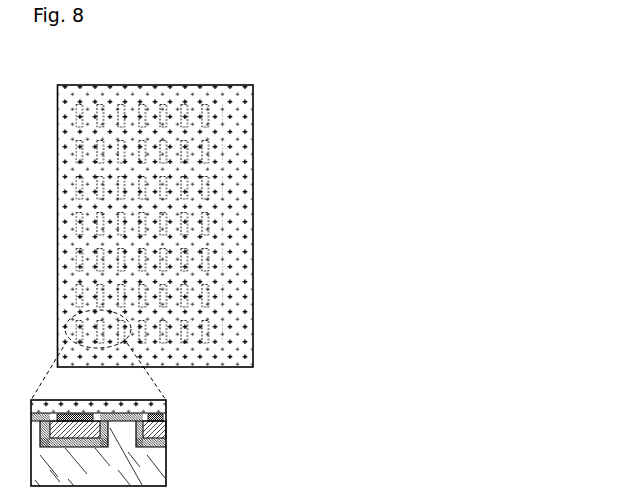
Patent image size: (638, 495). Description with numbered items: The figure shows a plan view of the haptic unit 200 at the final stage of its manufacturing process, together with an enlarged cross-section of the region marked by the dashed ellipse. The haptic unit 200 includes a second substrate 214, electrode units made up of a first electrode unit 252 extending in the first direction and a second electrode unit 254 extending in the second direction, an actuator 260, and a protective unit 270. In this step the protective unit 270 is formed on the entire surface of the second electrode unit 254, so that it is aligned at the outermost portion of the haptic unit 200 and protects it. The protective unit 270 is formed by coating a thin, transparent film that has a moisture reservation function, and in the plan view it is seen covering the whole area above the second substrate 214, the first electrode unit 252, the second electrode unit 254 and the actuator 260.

The haptic unit 200 is at (82, 52).
The protective unit 270 is at (238, 116).
The second electrode unit 254 is at (163, 416).
The actuator 260 is at (160, 430).
The first electrode unit 252 is at (164, 443).
The second substrate 214 is at (167, 477).